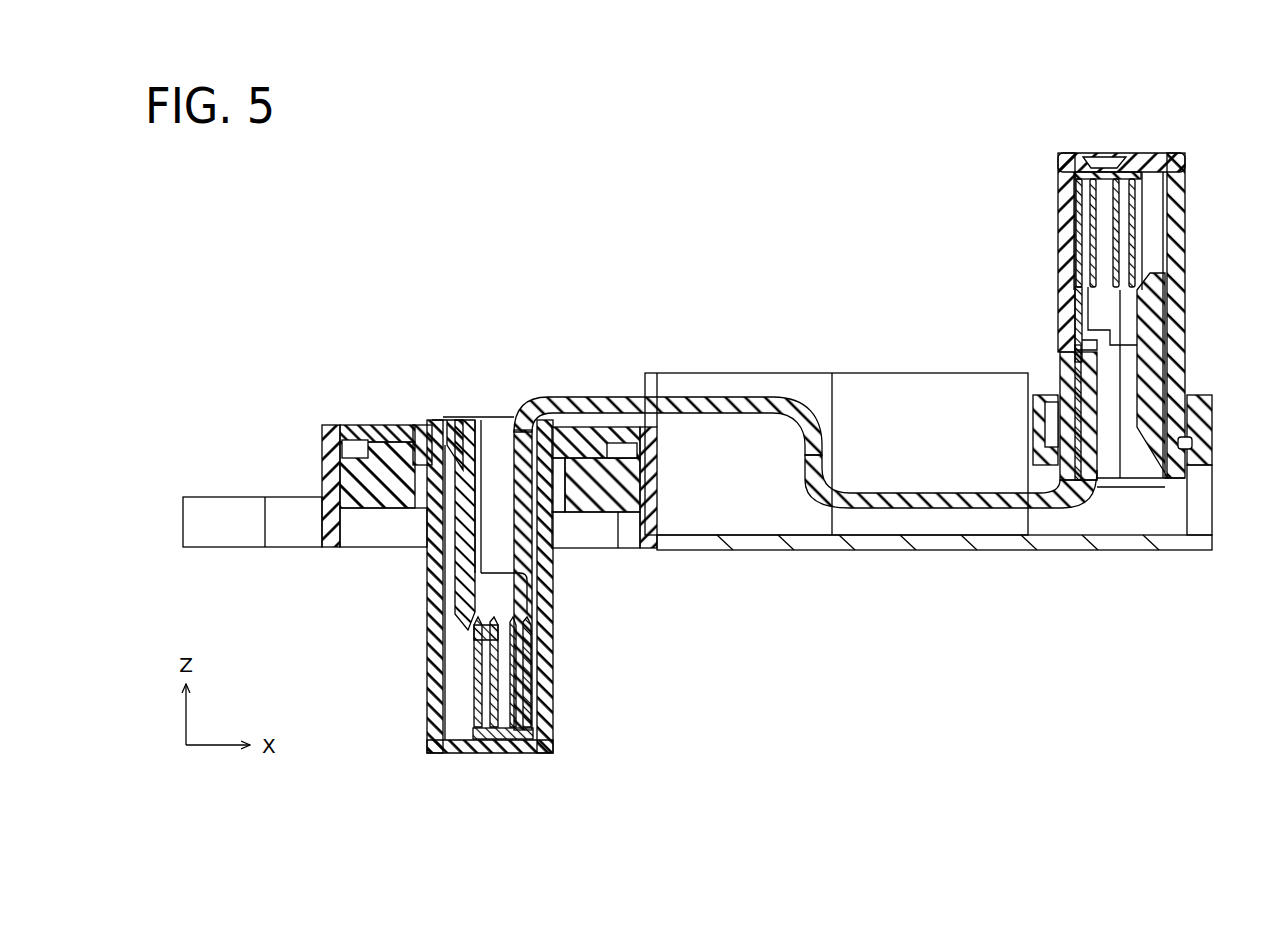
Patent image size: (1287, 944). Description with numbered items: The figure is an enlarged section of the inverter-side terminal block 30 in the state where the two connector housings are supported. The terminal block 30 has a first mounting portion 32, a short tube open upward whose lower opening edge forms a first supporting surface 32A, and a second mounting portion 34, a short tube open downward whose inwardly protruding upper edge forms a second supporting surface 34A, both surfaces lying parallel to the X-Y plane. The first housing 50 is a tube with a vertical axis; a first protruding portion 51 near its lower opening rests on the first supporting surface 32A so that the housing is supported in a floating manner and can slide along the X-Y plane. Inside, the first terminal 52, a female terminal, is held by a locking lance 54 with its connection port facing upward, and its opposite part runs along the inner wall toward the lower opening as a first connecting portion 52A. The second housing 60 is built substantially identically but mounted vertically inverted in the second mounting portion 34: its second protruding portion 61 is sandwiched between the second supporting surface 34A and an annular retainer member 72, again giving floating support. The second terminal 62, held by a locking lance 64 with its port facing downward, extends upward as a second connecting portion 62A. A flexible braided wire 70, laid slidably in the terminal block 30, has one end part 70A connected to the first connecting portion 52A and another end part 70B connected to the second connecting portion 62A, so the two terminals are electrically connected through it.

The inverter-side terminal block 30 is at (657, 336).
The first mounting portion 32 is at (1210, 412).
The first supporting surface 32A is at (1206, 461).
The second mounting portion 34 is at (323, 465).
The second supporting surface 34A is at (365, 450).
The first housing 50 is at (1125, 299).
The first protruding portion 51 is at (1195, 462).
The first terminal 52 is at (1127, 205).
The first connecting portion 52A is at (1070, 358).
The locking lance 54 is at (1150, 342).
The second housing 60 is at (508, 557).
The second protruding portion 61 is at (405, 448).
The second terminal 62 is at (476, 678).
The second connecting portion 62A is at (552, 520).
The locking lance 64 is at (456, 574).
The braided wire 70 is at (745, 398).
The one end part 70A is at (1088, 407).
The another end part 70B is at (516, 492).
The retainer member 72 is at (376, 502).